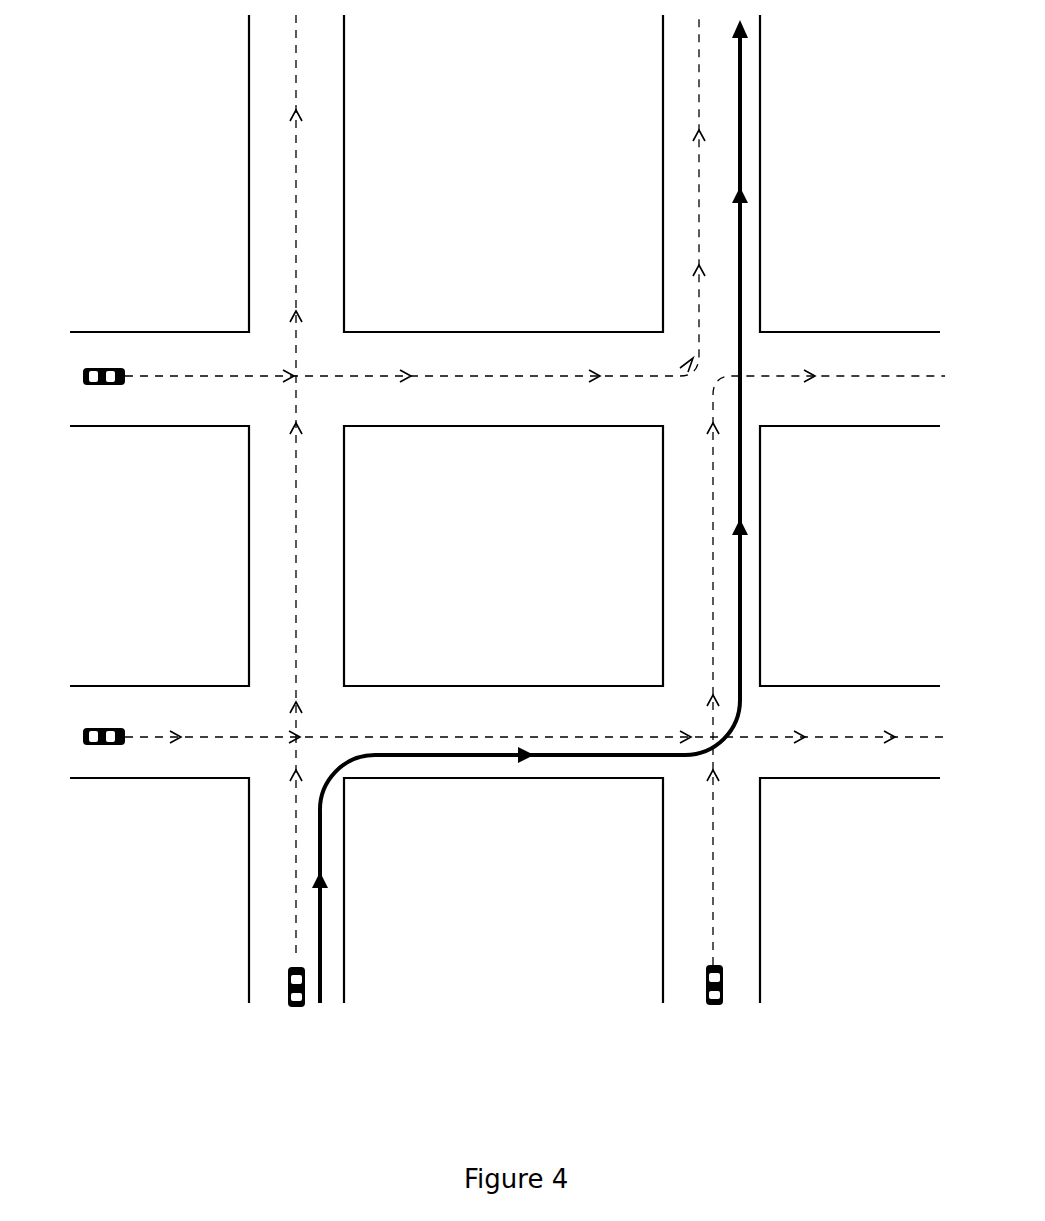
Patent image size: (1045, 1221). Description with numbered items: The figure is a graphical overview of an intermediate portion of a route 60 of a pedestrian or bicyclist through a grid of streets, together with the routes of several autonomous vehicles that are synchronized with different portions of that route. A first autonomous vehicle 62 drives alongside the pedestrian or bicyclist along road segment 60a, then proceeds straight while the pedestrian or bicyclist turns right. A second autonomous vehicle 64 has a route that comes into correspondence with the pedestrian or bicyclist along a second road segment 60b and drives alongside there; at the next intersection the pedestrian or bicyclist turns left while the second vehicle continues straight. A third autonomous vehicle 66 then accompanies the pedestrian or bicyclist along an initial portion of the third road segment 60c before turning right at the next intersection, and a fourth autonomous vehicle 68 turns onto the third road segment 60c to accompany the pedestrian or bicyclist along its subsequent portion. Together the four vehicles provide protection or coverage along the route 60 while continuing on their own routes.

The route 60 is at (572, 511).
The road segment 60a is at (348, 905).
The second road segment 60b is at (434, 779).
The third road segment 60c is at (762, 575).
The first autonomous vehicle 62 is at (303, 1012).
The second autonomous vehicle 64 is at (105, 728).
The third autonomous vehicle 66 is at (716, 1009).
The fourth autonomous vehicle 68 is at (105, 364).